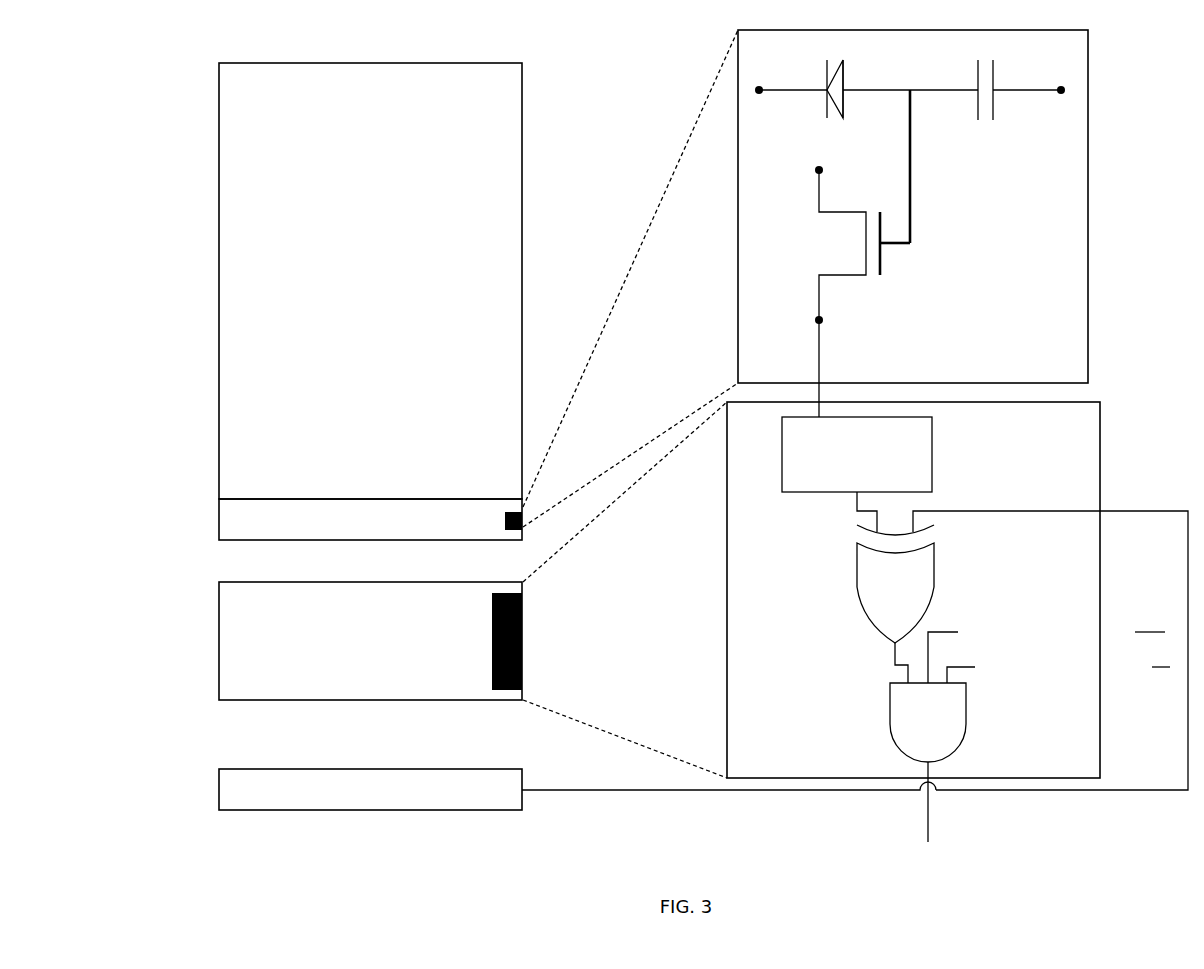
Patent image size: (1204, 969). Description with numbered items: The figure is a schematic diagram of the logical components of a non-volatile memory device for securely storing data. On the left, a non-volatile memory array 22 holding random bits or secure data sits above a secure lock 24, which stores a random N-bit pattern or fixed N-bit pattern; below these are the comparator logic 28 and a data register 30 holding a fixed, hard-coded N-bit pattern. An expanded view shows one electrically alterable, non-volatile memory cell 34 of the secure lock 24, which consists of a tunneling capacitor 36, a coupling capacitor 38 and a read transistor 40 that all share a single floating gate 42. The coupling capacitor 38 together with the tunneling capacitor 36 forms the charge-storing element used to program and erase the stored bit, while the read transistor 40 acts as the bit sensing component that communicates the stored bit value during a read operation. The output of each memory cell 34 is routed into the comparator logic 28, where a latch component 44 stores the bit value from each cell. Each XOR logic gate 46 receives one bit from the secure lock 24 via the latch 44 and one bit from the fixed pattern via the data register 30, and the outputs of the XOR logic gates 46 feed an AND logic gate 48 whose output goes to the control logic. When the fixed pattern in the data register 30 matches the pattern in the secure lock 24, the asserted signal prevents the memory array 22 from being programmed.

The memory array 22 is at (370, 281).
The secure lock 24 is at (218, 522).
The comparator logic 28 is at (370, 641).
The data register 30 is at (218, 790).
The electrically alterable, non-volatile memory cell 34 is at (913, 206).
The tunneling capacitor 36 is at (817, 83).
The coupling capacitor 38 is at (1013, 79).
The read transistor 40 is at (807, 238).
The floating gate 42 is at (911, 83).
The latch component 44 is at (857, 454).
The XOR logic gate 46 is at (842, 585).
The AND logic gate 48 is at (879, 722).